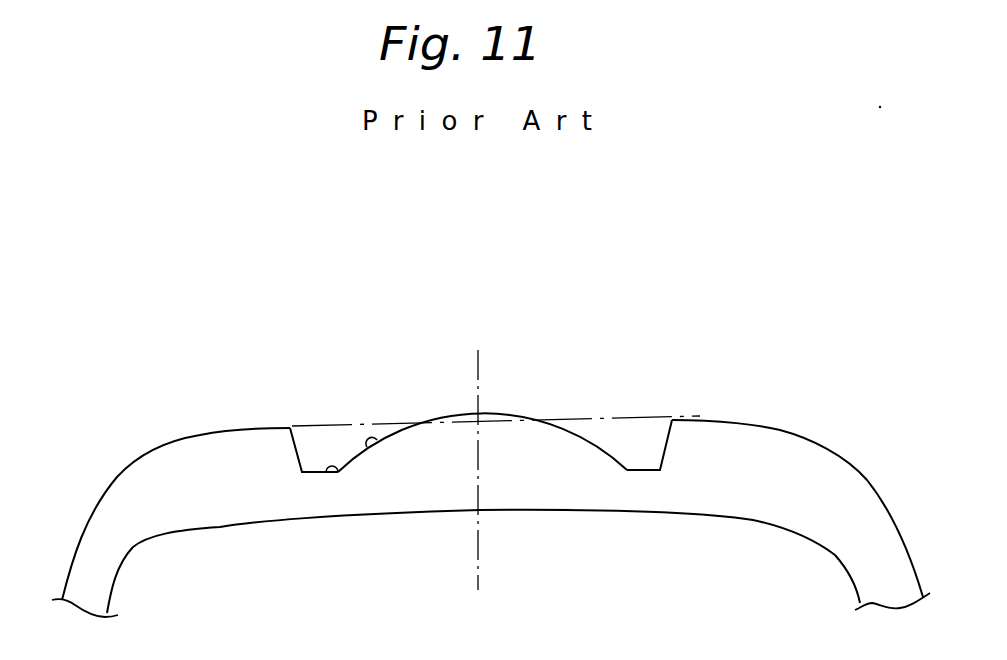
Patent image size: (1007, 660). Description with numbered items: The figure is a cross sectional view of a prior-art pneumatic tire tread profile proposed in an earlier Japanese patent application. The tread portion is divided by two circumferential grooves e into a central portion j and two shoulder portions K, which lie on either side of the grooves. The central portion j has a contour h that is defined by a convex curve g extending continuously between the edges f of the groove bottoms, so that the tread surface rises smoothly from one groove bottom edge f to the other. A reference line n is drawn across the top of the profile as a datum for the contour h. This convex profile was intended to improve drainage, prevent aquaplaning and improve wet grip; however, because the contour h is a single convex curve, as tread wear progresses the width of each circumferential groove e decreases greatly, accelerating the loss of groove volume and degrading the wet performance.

The shoulder portion K is at (200, 435).
The circumferential groove e is at (317, 445).
The reference plane n is at (338, 420).
The central portion j is at (422, 412).
The contour h is at (466, 412).
The edge of groove bottom f is at (327, 470).
The convex curve g is at (365, 452).